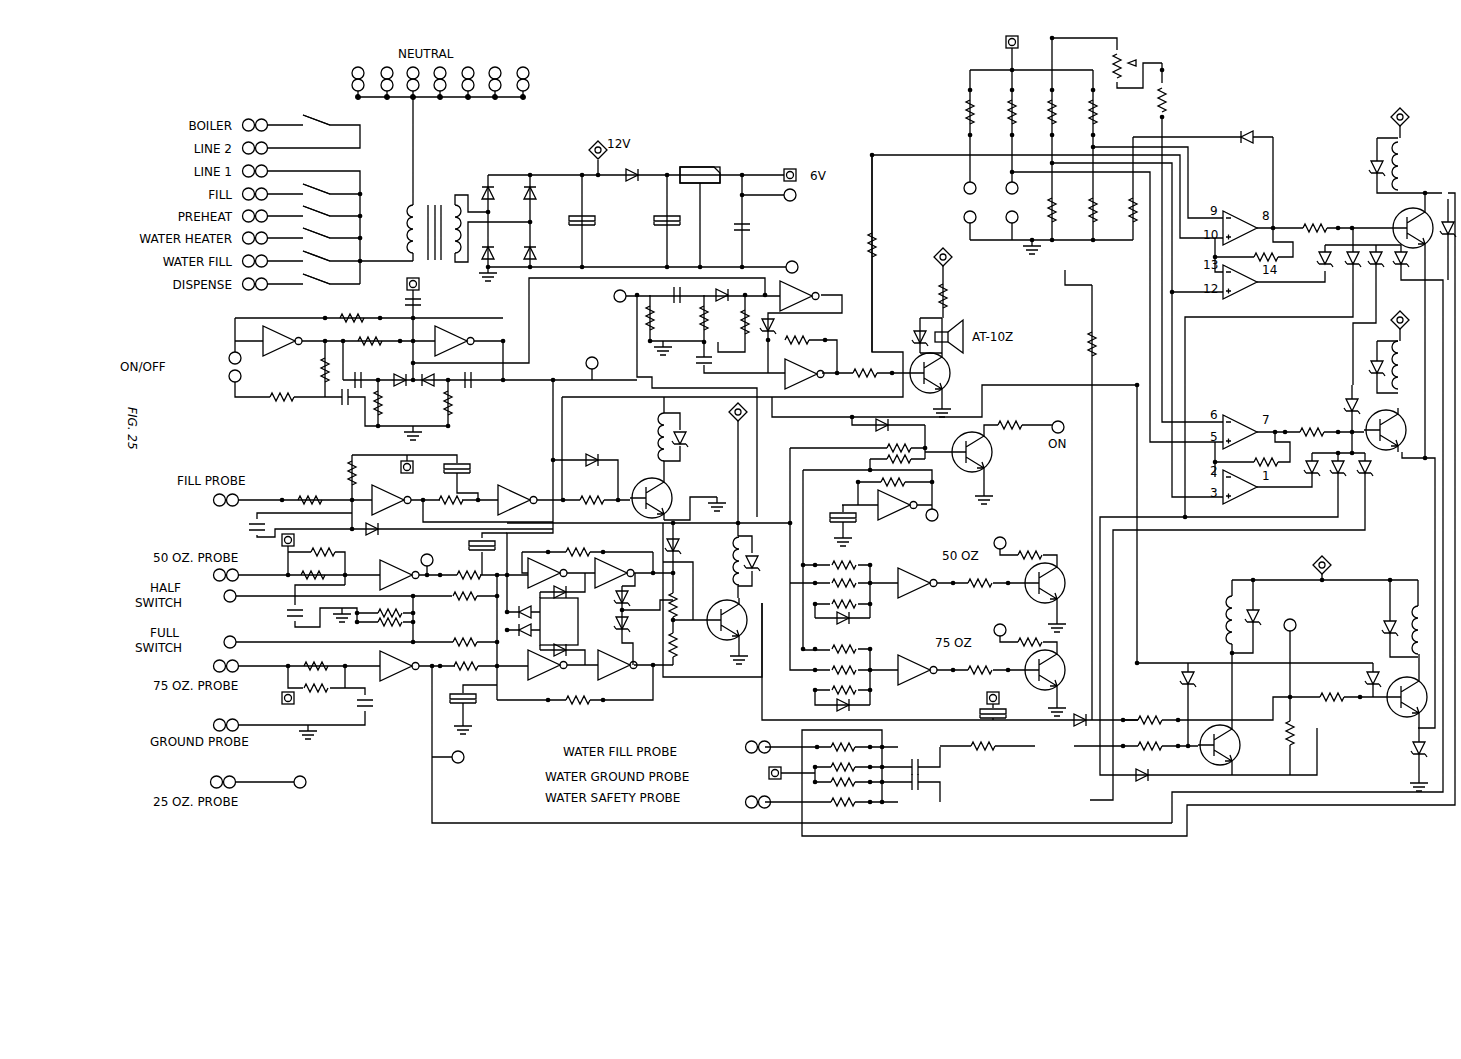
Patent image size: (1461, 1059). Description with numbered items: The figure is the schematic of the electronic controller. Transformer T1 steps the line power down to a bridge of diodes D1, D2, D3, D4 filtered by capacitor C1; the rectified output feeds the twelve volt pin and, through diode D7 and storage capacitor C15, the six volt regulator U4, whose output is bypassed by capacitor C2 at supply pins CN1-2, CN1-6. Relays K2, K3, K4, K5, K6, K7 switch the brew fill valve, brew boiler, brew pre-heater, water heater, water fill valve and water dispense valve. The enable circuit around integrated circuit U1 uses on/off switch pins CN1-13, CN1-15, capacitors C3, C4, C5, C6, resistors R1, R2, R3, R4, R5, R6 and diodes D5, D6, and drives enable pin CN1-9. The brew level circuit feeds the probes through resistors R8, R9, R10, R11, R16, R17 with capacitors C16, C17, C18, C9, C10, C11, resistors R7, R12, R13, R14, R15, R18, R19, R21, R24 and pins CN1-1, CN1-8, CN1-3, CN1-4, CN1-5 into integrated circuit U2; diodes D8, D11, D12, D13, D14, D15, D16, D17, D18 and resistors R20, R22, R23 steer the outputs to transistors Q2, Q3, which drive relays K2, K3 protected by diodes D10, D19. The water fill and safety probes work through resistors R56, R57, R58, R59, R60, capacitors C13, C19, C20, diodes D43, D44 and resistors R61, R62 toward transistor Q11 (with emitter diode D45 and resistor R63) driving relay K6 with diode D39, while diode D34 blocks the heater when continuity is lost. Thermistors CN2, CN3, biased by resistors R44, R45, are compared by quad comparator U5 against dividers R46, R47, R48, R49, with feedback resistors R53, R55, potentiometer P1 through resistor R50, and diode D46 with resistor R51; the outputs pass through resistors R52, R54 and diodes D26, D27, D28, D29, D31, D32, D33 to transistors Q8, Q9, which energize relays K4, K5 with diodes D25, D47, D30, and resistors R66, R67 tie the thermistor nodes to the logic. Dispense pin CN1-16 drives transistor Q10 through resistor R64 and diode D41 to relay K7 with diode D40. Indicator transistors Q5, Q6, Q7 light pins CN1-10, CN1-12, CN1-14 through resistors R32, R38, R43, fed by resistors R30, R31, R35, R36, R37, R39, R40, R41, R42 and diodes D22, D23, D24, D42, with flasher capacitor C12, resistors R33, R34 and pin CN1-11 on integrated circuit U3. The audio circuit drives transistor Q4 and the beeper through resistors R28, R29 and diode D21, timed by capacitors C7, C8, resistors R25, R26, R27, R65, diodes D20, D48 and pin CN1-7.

The transformer T1 is at (434, 216).
The brew fill solenoid valve relay K2 is at (483, 319).
The brew boiler relay K3 is at (326, 116).
The brew heater relay K4 is at (864, 179).
The water heater relay K5 is at (864, 305).
The water fill solenoid valve relay K6 is at (767, 444).
The water dispense valve relay K7 is at (860, 460).
The integrated circuit U1 is at (543, 335).
The integrated circuit U2 is at (504, 583).
The integrated circuit U3 is at (907, 587).
The 6 volt DC regulator U4 is at (700, 175).
The quad op amp comparator package U5 is at (1242, 357).
The potentiometer P1 is at (1128, 57).
The brew thermistor CN2 is at (955, 202).
The hot water thermistor CN3 is at (1000, 202).
The transistor Q2 is at (648, 498).
The transistor Q3 is at (722, 621).
The transistor Q4 is at (941, 357).
The transistor Q5 is at (983, 452).
The transistor Q6 is at (1054, 583).
The transistor Q7 is at (1037, 669).
The transistor Q8 is at (1406, 224).
The transistor Q9 is at (1385, 425).
The transistor Q10 is at (1395, 698).
The transistor Q11 is at (1219, 750).
The resistor R1 is at (282, 405).
The resistor R2 is at (313, 370).
The resistor R3 is at (352, 325).
The resistor R4 is at (370, 348).
The resistor R5 is at (387, 404).
The resistor R6 is at (457, 404).
The resistor R7 is at (451, 507).
The resistor R8 is at (362, 473).
The resistor R9 is at (310, 493).
The resistor R10 is at (321, 545).
The resistor R11 is at (313, 569).
The resistor R12 is at (465, 569).
The resistor R13 is at (463, 589).
The resistor R14 is at (390, 606).
The resistor R15 is at (390, 628).
The resistor R16 is at (315, 659).
The resistor R17 is at (315, 682).
The resistor R18 is at (464, 635).
The resistor R19 is at (465, 659).
The resistor R20 is at (591, 493).
The resistor R21 is at (578, 545).
The resistor R22 is at (659, 605).
The resistor R23 is at (659, 643).
The resistor R24 is at (576, 707).
The resistor R25 is at (637, 319).
The resistor R26 is at (692, 318).
The resistor R27 is at (797, 347).
The resistor R28 is at (864, 367).
The resistor R29 is at (926, 296).
The resistor R30 is at (874, 443).
The resistor R31 is at (874, 459).
The resistor R32 is at (1009, 418).
The resistor R33 is at (864, 481).
The resistor R34 is at (844, 559).
The resistor R35 is at (844, 577).
The resistor R36 is at (844, 598).
The resistor R37 is at (979, 590).
The resistor R38 is at (1030, 548).
The resistor R39 is at (844, 643).
The resistor R40 is at (844, 664).
The resistor R41 is at (844, 684).
The resistor R42 is at (979, 677).
The resistor R43 is at (1030, 635).
The resistor R44 is at (955, 112).
The resistor R45 is at (998, 112).
The resistor R46 is at (1038, 112).
The resistor R47 is at (1038, 210).
The resistor R48 is at (1079, 112).
The resistor R49 is at (1088, 229).
The resistor R50 is at (1176, 97).
The resistor R51 is at (1121, 210).
The resistor R52 is at (1313, 221).
The resistor R53 is at (1260, 251).
The resistor R54 is at (1310, 424).
The resistor R55 is at (1260, 455).
The resistor R56 is at (842, 740).
The resistor R57 is at (842, 761).
The resistor R58 is at (842, 788).
The resistor R59 is at (842, 808).
The resistor R60 is at (982, 752).
The resistor R61 is at (1142, 712).
The resistor R62 is at (1142, 739).
The resistor R63 is at (1274, 733).
The resistor R64 is at (1331, 704).
The resistor R65 is at (732, 322).
The resistor R66 is at (886, 244).
The resistor R67 is at (1106, 344).
The capacitor C1 is at (574, 214).
The capacitor C2 is at (751, 229).
The capacitor C3 is at (423, 302).
The capacitor C4 is at (341, 403).
The capacitor C5 is at (368, 376).
The capacitor C6 is at (470, 385).
The capacitor C7 is at (667, 291).
The capacitor C8 is at (694, 356).
The capacitor C9 is at (471, 469).
The capacitor C10 is at (502, 542).
The capacitor C11 is at (474, 704).
The capacitor C12 is at (832, 510).
The capacitor C13 is at (977, 712).
The capacitor C15 is at (656, 213).
The capacitor C16 is at (250, 528).
The capacitor C17 is at (287, 614).
The capacitor C18 is at (374, 702).
The capacitor C19 is at (928, 762).
The capacitor C20 is at (928, 785).
The diode D1 is at (498, 189).
The diode D2 is at (540, 189).
The diode D3 is at (498, 249).
The diode D4 is at (540, 249).
The diode D5 is at (397, 386).
The diode D6 is at (428, 386).
The diode D7 is at (630, 181).
The diode D8 is at (593, 466).
The diode D10 is at (695, 439).
The diode D11 is at (388, 524).
The diode D12 is at (615, 595).
The diode D13 is at (615, 626).
The diode D14 is at (545, 614).
The diode D15 is at (545, 628).
The diode D16 is at (559, 615).
The diode D17 is at (558, 643).
The diode D18 is at (657, 543).
The diode D19 is at (763, 555).
The diode D20 is at (782, 326).
The diode D21 is at (905, 338).
The diode D22 is at (857, 623).
The diode D23 is at (860, 710).
The diode D24 is at (879, 415).
The diode D25 is at (1363, 168).
The diode D26 is at (1324, 249).
The diode D27 is at (1341, 274).
The diode D28 is at (1378, 249).
The diode D29 is at (1402, 274).
The diode D30 is at (1353, 368).
The diode D31 is at (1340, 406).
The diode D32 is at (1310, 481).
The diode D33 is at (1334, 455).
The diode D34 is at (1377, 475).
The diode D39 is at (1264, 625).
The diode D40 is at (1376, 618).
The diode D41 is at (1359, 679).
The diode D42 is at (1202, 679).
The diode D43 is at (1089, 726).
The diode D44 is at (1140, 781).
The diode D45 is at (1403, 750).
The diode D46 is at (1248, 129).
The diode D47 is at (1442, 243).
The diode D48 is at (710, 288).
The half switch pin CN1-1 is at (226, 603).
The 6 volt supply pin CN1-2 is at (786, 202).
The brew 25 oz. probe pin CN1-3 is at (305, 774).
The pin CN1-4 is at (460, 763).
The pin CN1-5 is at (405, 553).
The supply pin CN1-6 is at (788, 260).
The pin CN1-7 is at (603, 303).
The full switch pin CN1-8 is at (226, 633).
The enable pin CN1-9 is at (583, 355).
The on/off light pin CN1-10 is at (1060, 419).
The flasher pin CN1-11 is at (914, 523).
The half light pin CN1-12 is at (995, 535).
The on/off switch pin CN1-13 is at (205, 351).
The full light pin CN1-14 is at (1000, 623).
The on/off switch pin CN1-15 is at (205, 382).
The hot water dispense switch pin CN1-16 is at (1297, 616).